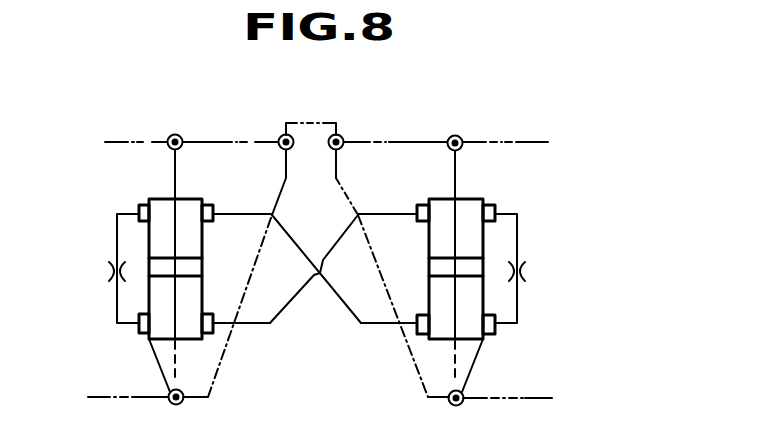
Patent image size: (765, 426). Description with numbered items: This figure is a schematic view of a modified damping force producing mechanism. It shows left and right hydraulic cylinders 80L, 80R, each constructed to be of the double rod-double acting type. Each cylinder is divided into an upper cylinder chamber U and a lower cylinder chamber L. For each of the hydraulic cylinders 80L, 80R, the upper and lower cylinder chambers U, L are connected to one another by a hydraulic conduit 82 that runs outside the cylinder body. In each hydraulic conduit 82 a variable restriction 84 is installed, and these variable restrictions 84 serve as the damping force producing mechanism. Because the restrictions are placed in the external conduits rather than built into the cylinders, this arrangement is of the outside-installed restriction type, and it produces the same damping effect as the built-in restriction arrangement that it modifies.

The left hydraulic cylinder 80L is at (138, 199).
The right hydraulic cylinder 80R is at (497, 199).
The hydraulic conduit 82 is at (117, 236).
The variable restriction 84 is at (112, 271).
The upper cylinder chamber U is at (192, 232).
The lower cylinder chamber L is at (188, 290).